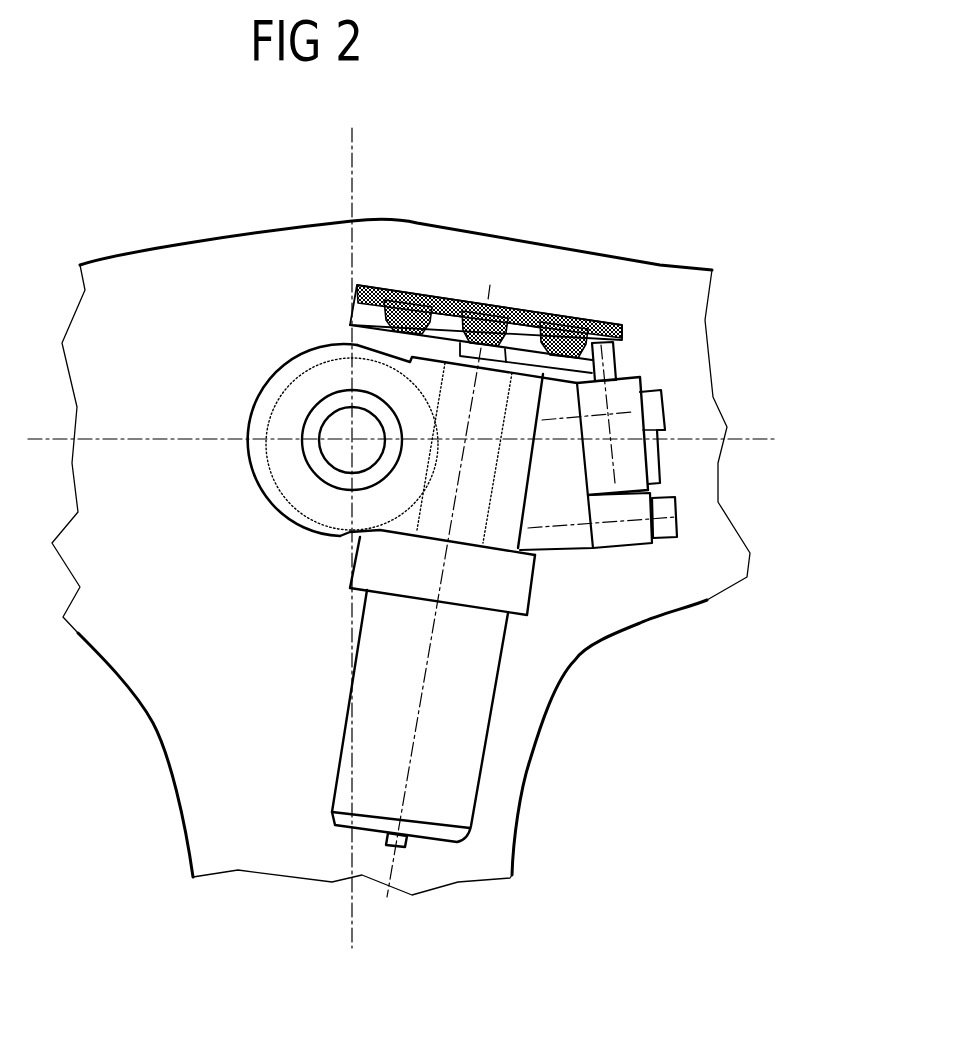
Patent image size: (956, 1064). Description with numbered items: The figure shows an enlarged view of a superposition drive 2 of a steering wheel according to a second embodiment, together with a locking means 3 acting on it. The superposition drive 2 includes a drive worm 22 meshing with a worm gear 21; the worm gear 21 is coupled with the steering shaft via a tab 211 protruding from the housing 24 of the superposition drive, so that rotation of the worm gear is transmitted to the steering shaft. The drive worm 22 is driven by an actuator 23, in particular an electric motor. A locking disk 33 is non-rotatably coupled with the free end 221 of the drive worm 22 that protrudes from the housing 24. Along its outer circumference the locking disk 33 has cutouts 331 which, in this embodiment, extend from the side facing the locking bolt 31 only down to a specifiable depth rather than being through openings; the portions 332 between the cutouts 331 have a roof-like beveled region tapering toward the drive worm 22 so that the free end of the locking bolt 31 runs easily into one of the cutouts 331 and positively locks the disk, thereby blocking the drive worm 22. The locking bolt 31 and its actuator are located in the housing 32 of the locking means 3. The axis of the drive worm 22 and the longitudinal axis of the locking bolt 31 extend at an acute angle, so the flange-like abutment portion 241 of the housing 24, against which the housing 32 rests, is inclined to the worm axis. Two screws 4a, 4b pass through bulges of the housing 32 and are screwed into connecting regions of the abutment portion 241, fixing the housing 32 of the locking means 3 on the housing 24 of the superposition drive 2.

The superposition drive 2 is at (332, 717).
The worm gear 21 is at (280, 457).
The tab 211 is at (318, 420).
The drive worm 22 is at (520, 551).
The free end of the drive worm 221 is at (460, 350).
The actuator 23 is at (462, 762).
The housing of the superposition drive 24 is at (573, 535).
The abutment portion 241 is at (587, 478).
The locking means 3 is at (673, 464).
The locking bolt 31 is at (608, 365).
The housing of the locking means 32 is at (627, 410).
The locking disk 33 is at (537, 292).
The cutouts 331 is at (442, 327).
The portions of the locking disk 332 is at (490, 308).
The screw 4a is at (657, 407).
The screw 4b is at (668, 530).